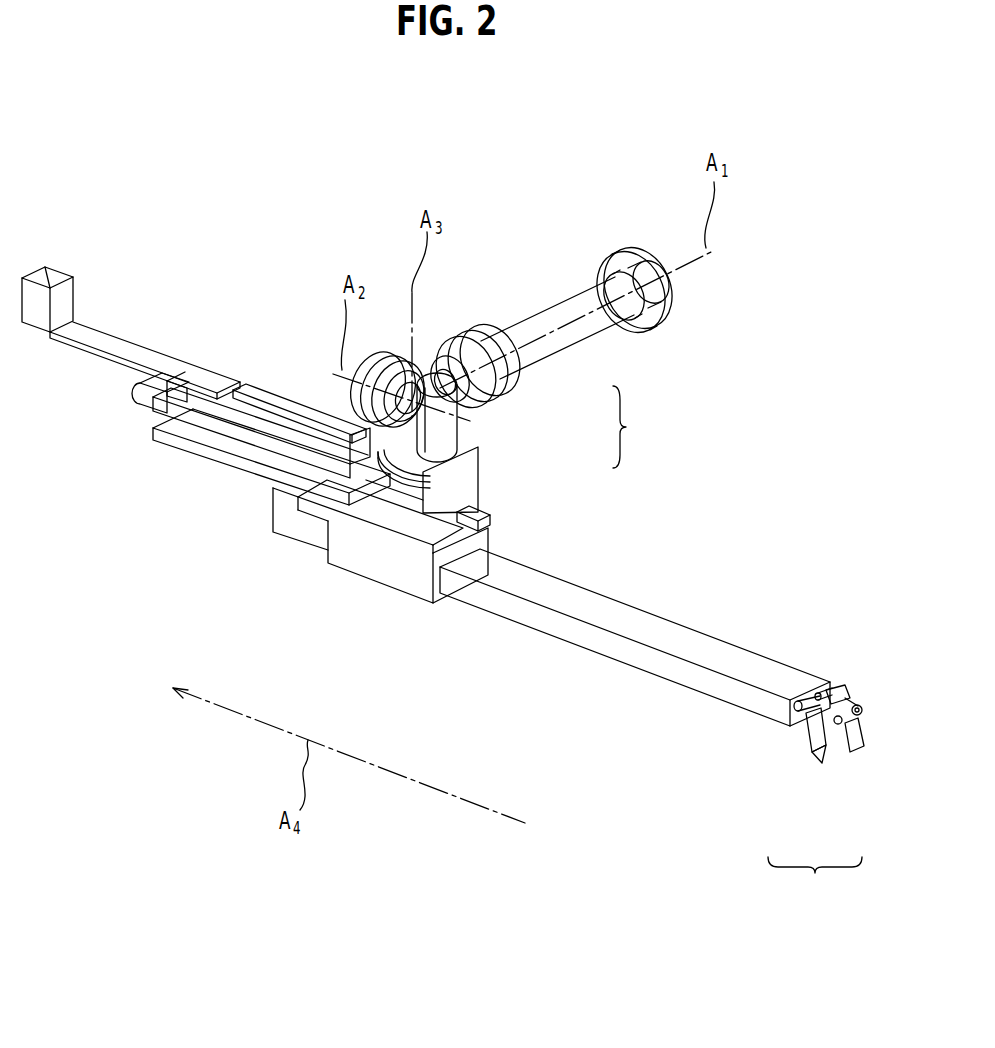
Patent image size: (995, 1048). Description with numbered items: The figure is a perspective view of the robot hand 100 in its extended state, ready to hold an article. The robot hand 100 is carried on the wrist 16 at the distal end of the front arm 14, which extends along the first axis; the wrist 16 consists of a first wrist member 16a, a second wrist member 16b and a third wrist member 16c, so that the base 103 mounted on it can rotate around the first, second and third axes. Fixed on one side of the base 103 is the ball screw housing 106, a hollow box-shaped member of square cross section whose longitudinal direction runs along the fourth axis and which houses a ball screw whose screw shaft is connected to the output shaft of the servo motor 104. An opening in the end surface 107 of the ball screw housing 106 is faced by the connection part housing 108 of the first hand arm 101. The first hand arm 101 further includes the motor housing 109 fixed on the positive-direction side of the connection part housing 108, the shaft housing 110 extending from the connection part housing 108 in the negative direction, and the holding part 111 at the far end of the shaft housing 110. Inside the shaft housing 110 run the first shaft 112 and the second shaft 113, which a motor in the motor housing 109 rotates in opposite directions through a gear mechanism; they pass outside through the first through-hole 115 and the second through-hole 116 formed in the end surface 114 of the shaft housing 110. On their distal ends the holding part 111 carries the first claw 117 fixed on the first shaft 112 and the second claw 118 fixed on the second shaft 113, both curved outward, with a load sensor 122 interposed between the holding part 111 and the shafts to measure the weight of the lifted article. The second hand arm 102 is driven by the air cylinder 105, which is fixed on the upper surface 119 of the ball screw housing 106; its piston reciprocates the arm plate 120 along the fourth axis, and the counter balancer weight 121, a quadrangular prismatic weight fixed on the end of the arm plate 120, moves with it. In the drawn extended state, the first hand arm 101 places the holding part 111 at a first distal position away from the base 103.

The robot hand 100 is at (254, 170).
The counter balancer weight 121 is at (48, 273).
The arm plate 120 is at (126, 350).
The second hand arm 102 is at (189, 349).
The air cylinder 105 is at (302, 408).
The upper surface 119 is at (248, 426).
The servo motor 104 is at (133, 388).
The ball screw housing 106 is at (163, 453).
The end surface 107 is at (200, 456).
The base 103 is at (340, 451).
The motor housing 109 is at (293, 524).
The connection part housing 108 is at (363, 554).
The shaft housing 110 is at (500, 628).
The first hand arm 101 is at (575, 651).
The front arm 14 is at (556, 312).
The wrist 16 is at (632, 427).
The first wrist member 16a is at (462, 405).
The second wrist member 16b is at (448, 433).
The third wrist member 16c is at (432, 447).
The holding part 111 is at (815, 880).
The first shaft 112 is at (830, 689).
The second shaft 113 is at (806, 722).
The end surface 114 is at (812, 681).
The first through-hole 115 is at (817, 692).
The second through-hole 116 is at (792, 704).
The first claw 117 is at (850, 750).
The second claw 118 is at (810, 760).
The load sensor 122 is at (852, 704).